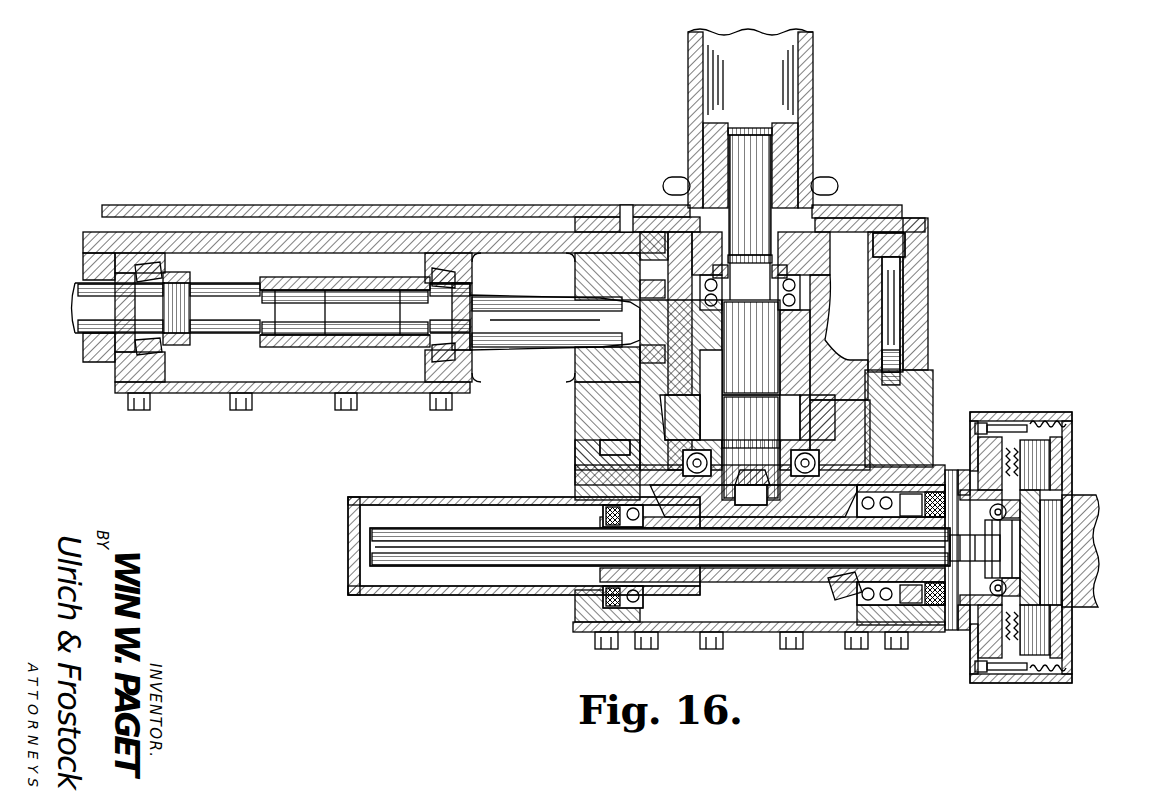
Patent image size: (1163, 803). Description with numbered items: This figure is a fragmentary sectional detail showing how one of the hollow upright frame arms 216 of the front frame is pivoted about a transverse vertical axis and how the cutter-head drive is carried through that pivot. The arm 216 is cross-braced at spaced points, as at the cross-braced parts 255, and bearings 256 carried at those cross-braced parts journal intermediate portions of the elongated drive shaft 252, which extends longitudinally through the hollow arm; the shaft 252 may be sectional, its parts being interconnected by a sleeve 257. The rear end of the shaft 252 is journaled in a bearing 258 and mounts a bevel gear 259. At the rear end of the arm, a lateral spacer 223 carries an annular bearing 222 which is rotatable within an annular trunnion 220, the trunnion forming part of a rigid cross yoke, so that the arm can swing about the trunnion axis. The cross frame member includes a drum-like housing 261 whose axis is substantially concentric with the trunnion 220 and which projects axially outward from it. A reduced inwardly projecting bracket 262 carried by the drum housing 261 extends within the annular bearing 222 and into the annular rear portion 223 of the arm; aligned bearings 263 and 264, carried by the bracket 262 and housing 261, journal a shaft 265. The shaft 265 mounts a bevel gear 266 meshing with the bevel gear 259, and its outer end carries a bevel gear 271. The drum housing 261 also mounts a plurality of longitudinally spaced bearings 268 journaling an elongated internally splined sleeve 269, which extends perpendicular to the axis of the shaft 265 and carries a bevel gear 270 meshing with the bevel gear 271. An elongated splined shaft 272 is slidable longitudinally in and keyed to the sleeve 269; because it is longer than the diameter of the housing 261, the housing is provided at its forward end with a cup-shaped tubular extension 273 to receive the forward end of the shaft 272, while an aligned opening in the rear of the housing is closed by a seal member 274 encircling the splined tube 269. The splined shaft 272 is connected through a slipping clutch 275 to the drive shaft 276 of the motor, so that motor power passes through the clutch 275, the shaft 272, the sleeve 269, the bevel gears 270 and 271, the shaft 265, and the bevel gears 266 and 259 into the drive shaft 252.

The upright frame part 216 is at (285, 240).
The annular trunnion member 220 is at (592, 400).
The annular bearing 222 is at (625, 398).
The lateral spacer 223 is at (905, 280).
The drive shaft 252 is at (98, 300).
The cross-braced part 255 is at (168, 372).
The bearing 256 is at (150, 268).
The sleeve 257 is at (285, 343).
The bearing 258 is at (600, 285).
The bevel gear 259 is at (695, 250).
The drum-like housing 261 is at (585, 476).
The bracket 262 is at (815, 330).
The bearing 263 is at (802, 285).
The bearing 264 is at (806, 476).
The shaft 265 is at (752, 130).
The bevel gear 266 is at (685, 425).
The bearing 268 is at (640, 588).
The splined sleeve 269 is at (735, 572).
The bevel gear 270 is at (842, 600).
The bevel gear 271 is at (783, 490).
The splined shaft 272 is at (385, 543).
The tubular extension 273 is at (423, 594).
The seal member 274 is at (950, 622).
The slipping clutch 275 is at (1038, 688).
The motor drive shaft 276 is at (1088, 575).